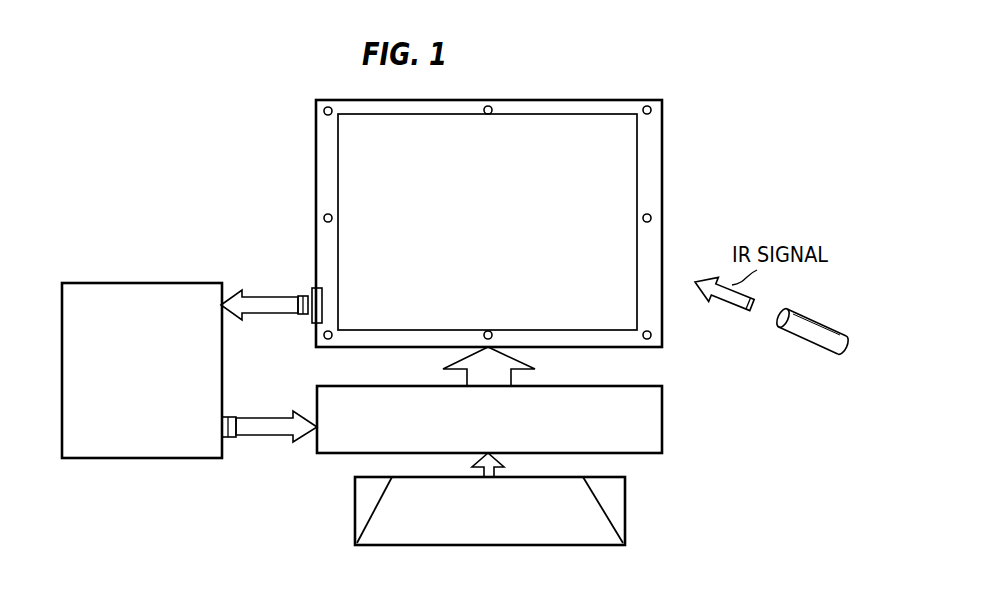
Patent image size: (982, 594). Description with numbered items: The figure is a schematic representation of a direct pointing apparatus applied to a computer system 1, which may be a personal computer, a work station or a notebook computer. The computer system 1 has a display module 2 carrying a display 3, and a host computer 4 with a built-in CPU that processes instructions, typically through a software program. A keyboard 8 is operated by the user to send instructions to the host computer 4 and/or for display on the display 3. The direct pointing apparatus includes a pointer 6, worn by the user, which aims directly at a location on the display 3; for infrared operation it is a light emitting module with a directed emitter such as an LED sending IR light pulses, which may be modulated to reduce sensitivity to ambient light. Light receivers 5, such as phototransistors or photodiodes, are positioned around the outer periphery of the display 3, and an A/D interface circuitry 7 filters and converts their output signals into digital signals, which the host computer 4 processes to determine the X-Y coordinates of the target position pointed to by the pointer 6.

The computer system 1 is at (510, 200).
The display module 2 is at (662, 163).
The display 3 is at (602, 113).
The host computer 4 is at (662, 418).
The light receivers 5 is at (324, 218).
The pointer 6 is at (812, 315).
The A/D interface circuitry 7 is at (190, 282).
The keyboard 8 is at (625, 505).